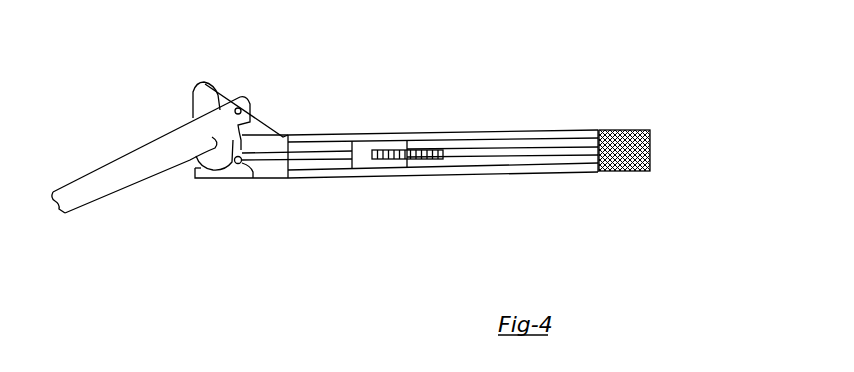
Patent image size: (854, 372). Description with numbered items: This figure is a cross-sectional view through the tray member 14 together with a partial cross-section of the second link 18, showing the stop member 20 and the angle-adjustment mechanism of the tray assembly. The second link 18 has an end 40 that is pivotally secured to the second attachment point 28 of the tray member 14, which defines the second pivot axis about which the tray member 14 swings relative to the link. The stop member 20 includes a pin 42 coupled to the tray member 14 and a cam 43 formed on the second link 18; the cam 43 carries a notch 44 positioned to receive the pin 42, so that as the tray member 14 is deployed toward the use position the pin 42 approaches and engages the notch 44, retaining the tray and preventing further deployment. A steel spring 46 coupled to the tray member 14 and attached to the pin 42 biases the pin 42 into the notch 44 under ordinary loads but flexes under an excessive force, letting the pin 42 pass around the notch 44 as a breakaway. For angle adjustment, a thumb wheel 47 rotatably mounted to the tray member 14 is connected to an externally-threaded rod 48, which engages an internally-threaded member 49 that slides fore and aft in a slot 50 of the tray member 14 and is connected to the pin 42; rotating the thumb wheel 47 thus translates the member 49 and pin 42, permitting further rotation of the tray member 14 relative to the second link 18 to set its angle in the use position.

The tray member 14 is at (483, 149).
The second link 18 is at (92, 199).
The stop member 20 is at (257, 140).
The second attachment point 28 is at (239, 107).
The another end 40 is at (197, 83).
The pin 42 is at (244, 167).
The cam 43 is at (184, 164).
The notch 44 is at (245, 180).
The steel spring 46 is at (316, 158).
The thumb wheel 47 is at (608, 174).
The externally-threaded rod 48 is at (513, 150).
The internally-threaded member 49 is at (361, 160).
The slot 50 is at (446, 164).